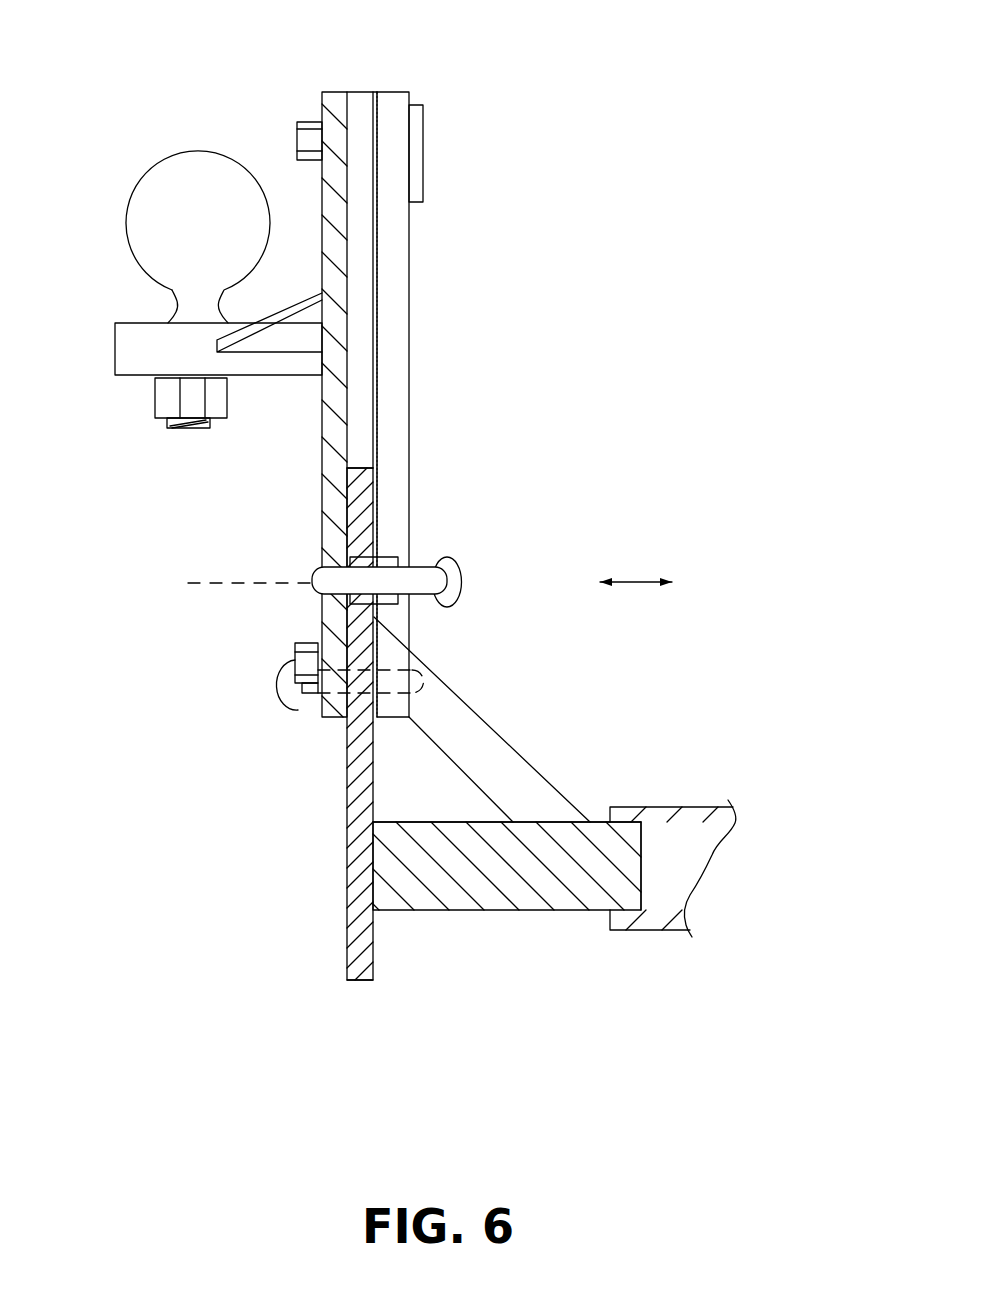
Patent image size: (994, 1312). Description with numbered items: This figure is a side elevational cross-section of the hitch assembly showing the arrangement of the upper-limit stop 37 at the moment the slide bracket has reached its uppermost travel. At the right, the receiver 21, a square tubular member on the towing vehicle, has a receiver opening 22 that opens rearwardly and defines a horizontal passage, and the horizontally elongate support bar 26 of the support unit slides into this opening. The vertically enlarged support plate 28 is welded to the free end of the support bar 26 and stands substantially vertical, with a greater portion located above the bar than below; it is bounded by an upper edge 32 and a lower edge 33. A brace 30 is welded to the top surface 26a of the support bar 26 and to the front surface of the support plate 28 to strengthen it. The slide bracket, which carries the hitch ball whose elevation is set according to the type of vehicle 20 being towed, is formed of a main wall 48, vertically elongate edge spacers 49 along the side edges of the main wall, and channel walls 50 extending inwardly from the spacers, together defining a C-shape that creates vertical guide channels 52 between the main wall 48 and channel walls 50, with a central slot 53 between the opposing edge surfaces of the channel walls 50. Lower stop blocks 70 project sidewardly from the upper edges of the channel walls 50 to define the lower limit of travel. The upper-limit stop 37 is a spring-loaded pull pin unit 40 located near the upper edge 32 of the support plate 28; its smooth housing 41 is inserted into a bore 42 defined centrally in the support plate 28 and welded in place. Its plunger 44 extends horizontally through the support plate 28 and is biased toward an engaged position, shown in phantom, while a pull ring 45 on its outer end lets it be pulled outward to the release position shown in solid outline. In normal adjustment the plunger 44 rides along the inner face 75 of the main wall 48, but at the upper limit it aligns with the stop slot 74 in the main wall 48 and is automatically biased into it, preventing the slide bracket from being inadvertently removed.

The vehicle 20 is at (160, 187).
The main wall 48 is at (333, 112).
The vertical guide channel 52 is at (363, 115).
The lower stop block 70 is at (420, 128).
The channel wall 50 is at (400, 247).
The edge spacer 49 is at (370, 270).
The central slot 53 is at (400, 317).
The inner face 75 is at (355, 397).
The upper edge 32 is at (363, 467).
The housing 41 is at (405, 556).
The spring-loaded pull pin unit 40 is at (435, 558).
The upper-limit stop 37 is at (485, 565).
The bore 42 is at (353, 556).
The plunger 44 is at (513, 588).
The stop slot 74 is at (332, 618).
The pull ring 45 is at (452, 603).
The top surface 26a is at (472, 822).
The brace 30 is at (542, 782).
The receiver 21 is at (685, 815).
The receiver opening 22 is at (675, 863).
The support bar 26 is at (540, 897).
The support plate 28 is at (353, 937).
The lower edge 33 is at (355, 978).